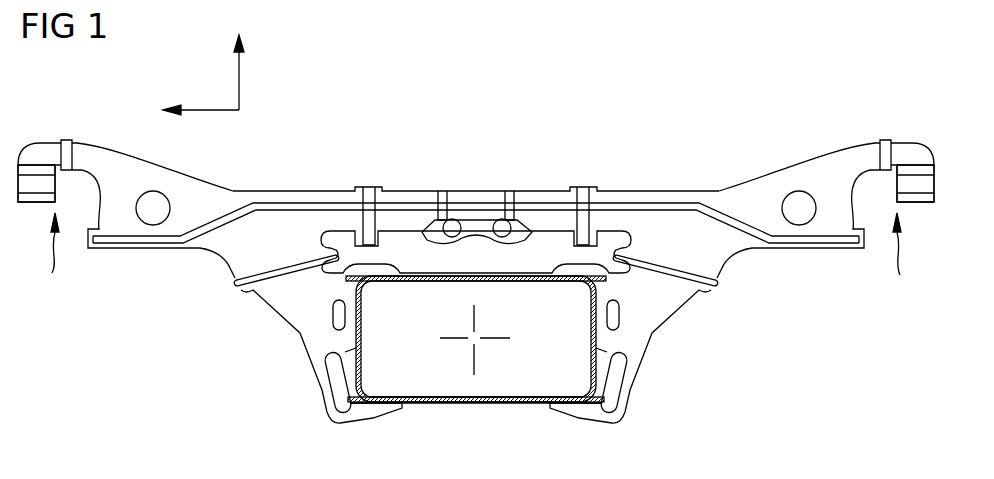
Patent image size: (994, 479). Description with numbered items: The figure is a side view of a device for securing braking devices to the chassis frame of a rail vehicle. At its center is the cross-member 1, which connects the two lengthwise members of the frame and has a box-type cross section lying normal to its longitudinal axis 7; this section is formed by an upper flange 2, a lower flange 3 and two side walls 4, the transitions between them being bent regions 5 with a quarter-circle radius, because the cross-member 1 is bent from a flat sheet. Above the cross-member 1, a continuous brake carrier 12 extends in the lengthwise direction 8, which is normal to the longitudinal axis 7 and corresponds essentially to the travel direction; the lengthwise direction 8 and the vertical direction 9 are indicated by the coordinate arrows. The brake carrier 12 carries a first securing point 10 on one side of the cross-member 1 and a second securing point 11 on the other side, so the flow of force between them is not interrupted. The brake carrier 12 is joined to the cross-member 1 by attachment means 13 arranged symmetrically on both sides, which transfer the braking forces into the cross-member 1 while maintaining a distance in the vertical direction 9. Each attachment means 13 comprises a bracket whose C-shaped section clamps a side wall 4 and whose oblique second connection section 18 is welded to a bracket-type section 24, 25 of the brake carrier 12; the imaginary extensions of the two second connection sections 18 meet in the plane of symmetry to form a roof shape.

The cross-member 1 is at (455, 398).
The upper flange 2 is at (476, 352).
The lower flange 3 is at (538, 405).
The side wall 4 is at (543, 282).
The bent region 5 is at (366, 390).
The longitudinal axis 7 is at (477, 342).
The lengthwise direction 8 is at (210, 110).
The vertical direction 9 is at (239, 78).
The first securing point 10 is at (46, 236).
The second securing point 11 is at (909, 236).
The brake carrier 12 is at (492, 196).
The attachment means 13 is at (478, 328).
The second connection section 18 is at (262, 274).
The bracket-type section 24 is at (232, 257).
The bracket-type section 25 is at (720, 257).